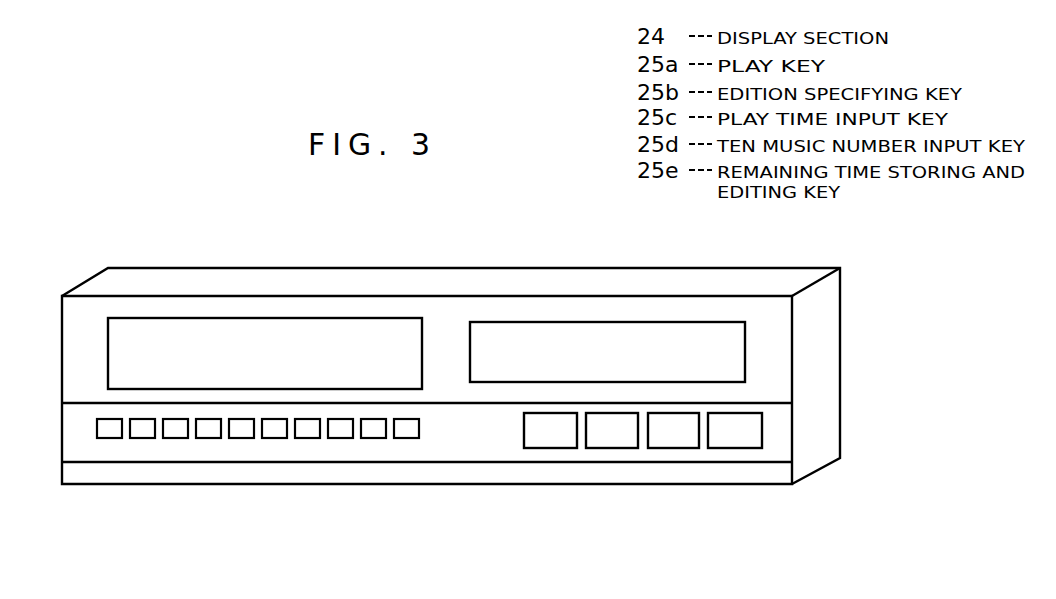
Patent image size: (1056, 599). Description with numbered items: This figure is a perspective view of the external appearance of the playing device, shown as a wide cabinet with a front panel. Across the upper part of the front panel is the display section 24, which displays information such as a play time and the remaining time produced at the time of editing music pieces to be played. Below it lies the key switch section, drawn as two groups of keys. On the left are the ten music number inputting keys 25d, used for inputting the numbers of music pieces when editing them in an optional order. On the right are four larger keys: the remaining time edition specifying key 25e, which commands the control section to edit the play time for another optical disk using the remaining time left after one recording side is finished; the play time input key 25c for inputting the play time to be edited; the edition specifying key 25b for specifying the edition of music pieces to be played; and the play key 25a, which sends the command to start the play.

The display section 24 is at (633, 322).
The play key 25a is at (732, 448).
The edition specifying key 25b is at (670, 448).
The play time input key 25c is at (610, 448).
The ten music number inputting keys 25d is at (425, 442).
The remaining time edition specifying key 25e is at (550, 448).